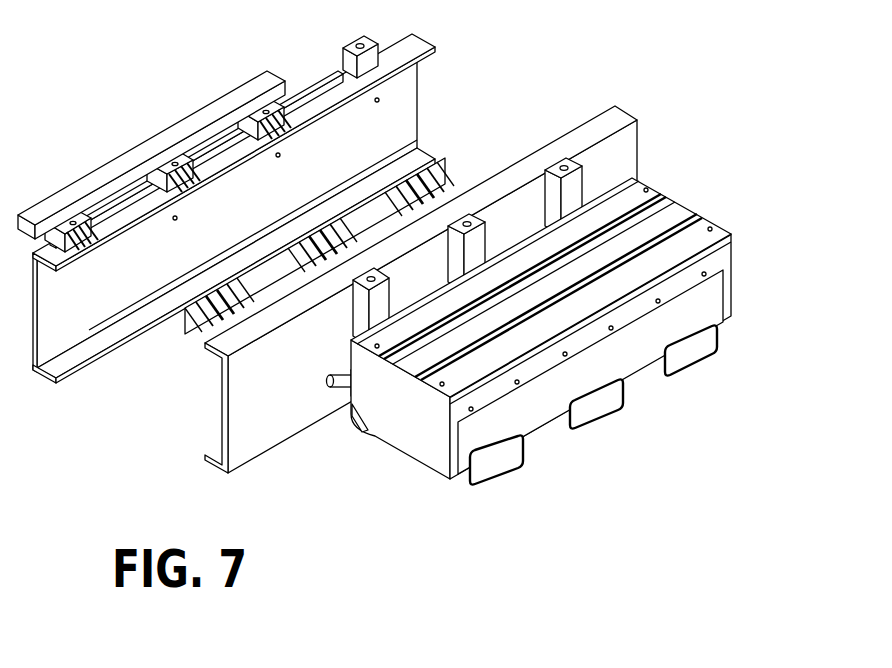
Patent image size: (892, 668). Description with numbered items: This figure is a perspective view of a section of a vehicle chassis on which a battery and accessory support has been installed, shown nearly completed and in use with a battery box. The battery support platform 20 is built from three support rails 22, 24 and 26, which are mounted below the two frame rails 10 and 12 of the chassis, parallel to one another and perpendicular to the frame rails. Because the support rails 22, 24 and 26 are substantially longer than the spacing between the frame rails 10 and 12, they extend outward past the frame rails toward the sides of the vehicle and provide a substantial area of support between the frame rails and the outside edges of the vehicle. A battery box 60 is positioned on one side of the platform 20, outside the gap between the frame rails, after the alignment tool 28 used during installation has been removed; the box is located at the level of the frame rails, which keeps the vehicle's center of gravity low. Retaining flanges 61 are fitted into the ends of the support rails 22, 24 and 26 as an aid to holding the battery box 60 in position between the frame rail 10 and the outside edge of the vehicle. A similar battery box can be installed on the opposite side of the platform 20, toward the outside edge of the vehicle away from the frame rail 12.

The frame rail 10 is at (620, 163).
The frame rail 12 is at (392, 103).
The battery support platform 20 is at (448, 331).
The support rail 22 is at (243, 300).
The support rail 24 is at (338, 244).
The support rail 26 is at (447, 182).
The alignment tool 28 is at (177, 133).
The battery box 60 is at (700, 265).
The retaining flange 61 is at (698, 353).